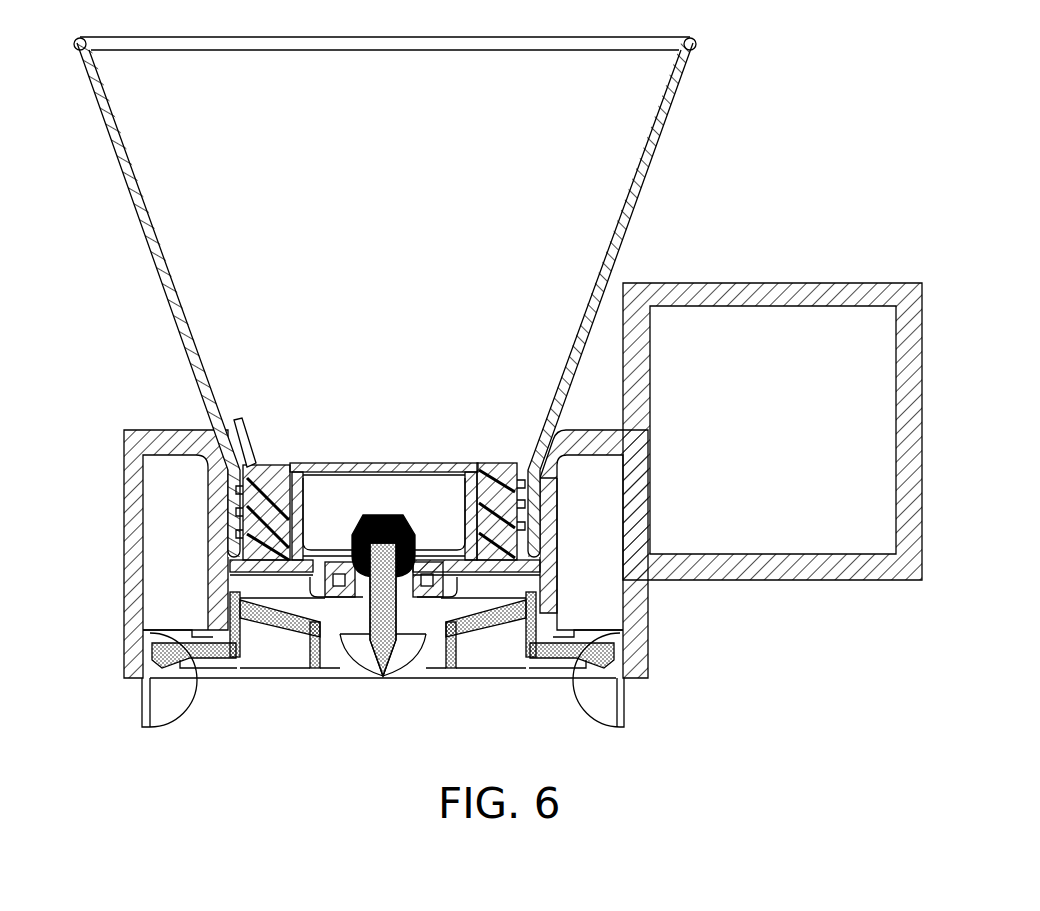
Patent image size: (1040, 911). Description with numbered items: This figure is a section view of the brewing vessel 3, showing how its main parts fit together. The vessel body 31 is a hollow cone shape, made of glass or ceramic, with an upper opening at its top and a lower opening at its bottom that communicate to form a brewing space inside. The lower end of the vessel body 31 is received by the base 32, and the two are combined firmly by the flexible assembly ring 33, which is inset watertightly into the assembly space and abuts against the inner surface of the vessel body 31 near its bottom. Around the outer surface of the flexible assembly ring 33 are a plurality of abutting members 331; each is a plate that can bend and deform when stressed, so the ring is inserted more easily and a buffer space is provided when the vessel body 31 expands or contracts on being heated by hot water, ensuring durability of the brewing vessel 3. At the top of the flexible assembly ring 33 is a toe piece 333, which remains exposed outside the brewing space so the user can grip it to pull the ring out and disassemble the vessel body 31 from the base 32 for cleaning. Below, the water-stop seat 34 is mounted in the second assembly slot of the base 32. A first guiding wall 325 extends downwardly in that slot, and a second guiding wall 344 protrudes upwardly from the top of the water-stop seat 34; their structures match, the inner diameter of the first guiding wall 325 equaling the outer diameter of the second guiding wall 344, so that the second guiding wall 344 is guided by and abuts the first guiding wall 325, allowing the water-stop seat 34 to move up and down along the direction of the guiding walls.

The brewing vessel 3 is at (960, 70).
The vessel body 31 is at (643, 166).
The base 32 is at (920, 438).
The first guiding wall 325 is at (538, 602).
The flexible assembly ring 33 is at (488, 452).
The abutting members 331 is at (260, 503).
The toe piece 333 is at (246, 444).
The water-stop seat 34 is at (406, 673).
The second guiding wall 344 is at (236, 596).